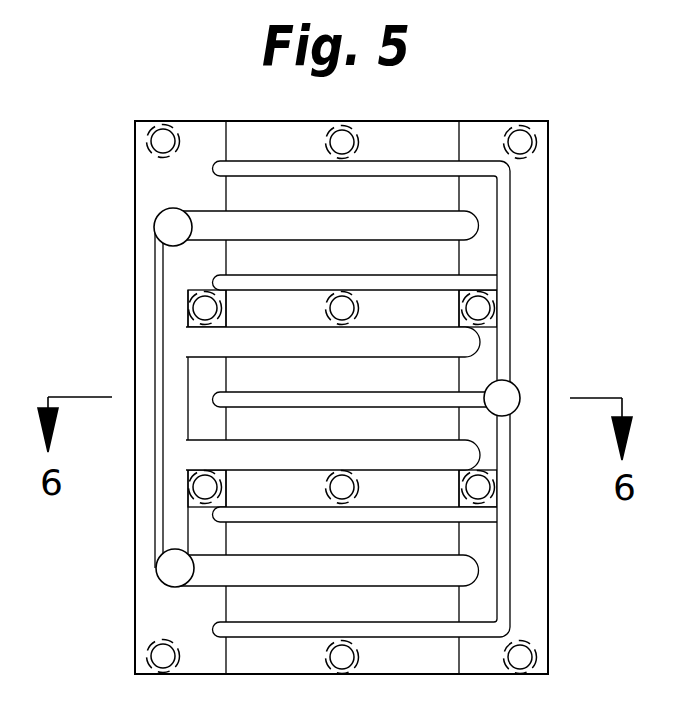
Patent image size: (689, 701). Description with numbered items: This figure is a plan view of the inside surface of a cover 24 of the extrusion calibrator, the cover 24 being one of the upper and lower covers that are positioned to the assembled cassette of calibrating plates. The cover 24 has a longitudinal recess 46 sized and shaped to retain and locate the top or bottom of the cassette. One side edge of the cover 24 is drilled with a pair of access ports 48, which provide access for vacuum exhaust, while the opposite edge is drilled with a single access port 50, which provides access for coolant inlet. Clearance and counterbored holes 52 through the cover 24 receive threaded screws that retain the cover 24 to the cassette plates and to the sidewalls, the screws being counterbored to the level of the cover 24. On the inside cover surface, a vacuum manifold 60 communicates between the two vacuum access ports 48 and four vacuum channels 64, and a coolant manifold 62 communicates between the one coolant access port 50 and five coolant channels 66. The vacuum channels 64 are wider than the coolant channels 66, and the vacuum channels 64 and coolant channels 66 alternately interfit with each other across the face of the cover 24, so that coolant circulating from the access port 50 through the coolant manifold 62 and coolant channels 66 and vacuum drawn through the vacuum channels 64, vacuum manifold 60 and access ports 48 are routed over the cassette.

The cover 24 is at (549, 171).
The longitudinal recess 46 is at (440, 121).
The access ports 48 is at (153, 226).
The access port 50 is at (525, 397).
The clearance and counterbored holes 52 is at (335, 128).
The vacuum manifold 60 is at (178, 548).
The coolant manifold 62 is at (503, 586).
The vacuum channels 64 is at (472, 343).
The coolant channels 66 is at (345, 162).